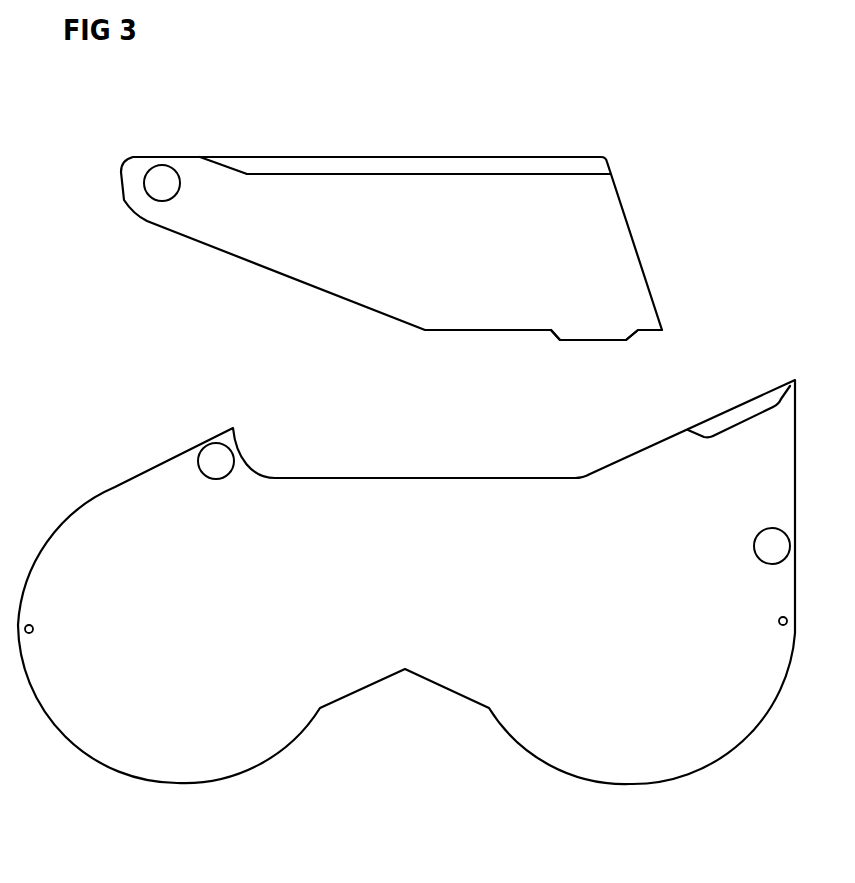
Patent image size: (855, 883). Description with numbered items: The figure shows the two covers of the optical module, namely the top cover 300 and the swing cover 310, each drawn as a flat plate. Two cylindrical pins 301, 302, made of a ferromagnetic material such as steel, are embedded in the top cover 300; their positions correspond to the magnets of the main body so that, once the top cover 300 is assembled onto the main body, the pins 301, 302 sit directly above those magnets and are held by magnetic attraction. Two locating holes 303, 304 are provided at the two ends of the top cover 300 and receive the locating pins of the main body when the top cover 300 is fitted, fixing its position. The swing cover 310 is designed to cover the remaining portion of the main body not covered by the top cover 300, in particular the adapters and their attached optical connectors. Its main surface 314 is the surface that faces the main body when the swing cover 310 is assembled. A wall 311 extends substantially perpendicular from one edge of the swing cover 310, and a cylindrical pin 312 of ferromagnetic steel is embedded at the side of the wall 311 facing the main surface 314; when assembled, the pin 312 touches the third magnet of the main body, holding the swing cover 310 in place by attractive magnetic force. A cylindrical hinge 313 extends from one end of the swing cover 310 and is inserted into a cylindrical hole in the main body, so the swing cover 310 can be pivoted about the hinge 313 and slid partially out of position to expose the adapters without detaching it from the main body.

The top cover 300 is at (130, 776).
The cylindrical pin 301 is at (215, 460).
The cylindrical pin 302 is at (763, 546).
The locating hole 303 is at (33, 627).
The locating hole 304 is at (779, 621).
The swing cover 310 is at (627, 227).
The wall 311 is at (373, 163).
The cylindrical pin 312 is at (537, 173).
The cylindrical hinge 313 is at (163, 187).
The main surface 314 is at (635, 297).